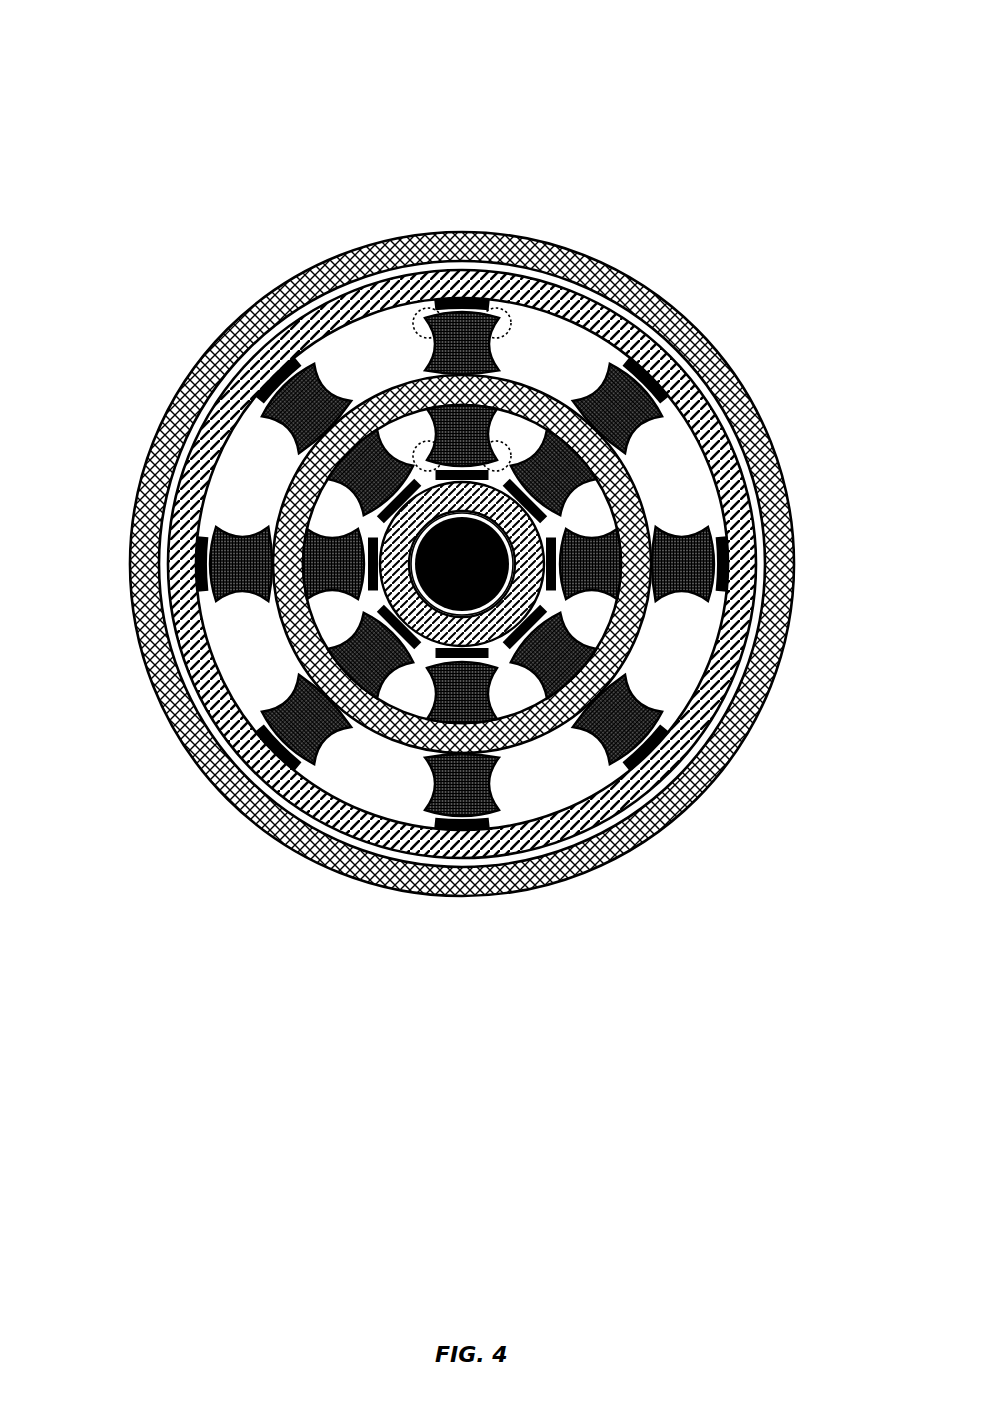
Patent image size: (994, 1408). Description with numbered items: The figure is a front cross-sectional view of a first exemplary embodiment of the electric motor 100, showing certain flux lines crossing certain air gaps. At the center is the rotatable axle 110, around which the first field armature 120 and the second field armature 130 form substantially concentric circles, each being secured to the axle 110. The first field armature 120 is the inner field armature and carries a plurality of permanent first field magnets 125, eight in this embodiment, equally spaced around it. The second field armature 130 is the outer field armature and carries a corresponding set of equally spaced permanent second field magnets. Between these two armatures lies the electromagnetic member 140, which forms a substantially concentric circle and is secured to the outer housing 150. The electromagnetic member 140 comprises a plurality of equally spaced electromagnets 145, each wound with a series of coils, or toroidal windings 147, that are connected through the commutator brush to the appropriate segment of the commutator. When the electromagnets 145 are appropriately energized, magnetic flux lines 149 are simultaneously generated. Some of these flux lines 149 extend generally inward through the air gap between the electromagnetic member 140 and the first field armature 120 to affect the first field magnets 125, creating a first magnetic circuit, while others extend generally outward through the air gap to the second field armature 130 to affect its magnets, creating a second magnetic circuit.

The electric motor 100 is at (228, 58).
The rotatable axle 110 is at (414, 538).
The first field armature 120 is at (490, 645).
The first field magnets 125 is at (503, 645).
The second field armature 130 is at (620, 317).
The electromagnetic member 140 is at (640, 478).
The electromagnets 145 is at (557, 564).
The toroidal windings 147 is at (774, 616).
The magnetic flux lines 149 is at (414, 443).
The housing 150 is at (250, 308).